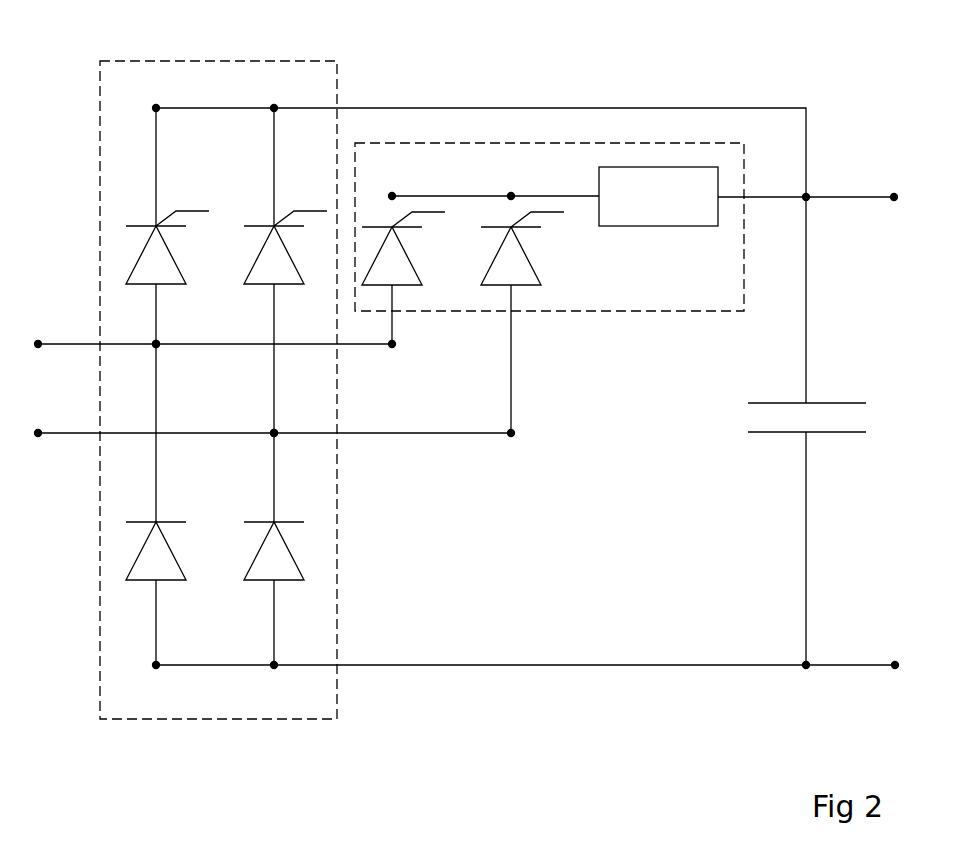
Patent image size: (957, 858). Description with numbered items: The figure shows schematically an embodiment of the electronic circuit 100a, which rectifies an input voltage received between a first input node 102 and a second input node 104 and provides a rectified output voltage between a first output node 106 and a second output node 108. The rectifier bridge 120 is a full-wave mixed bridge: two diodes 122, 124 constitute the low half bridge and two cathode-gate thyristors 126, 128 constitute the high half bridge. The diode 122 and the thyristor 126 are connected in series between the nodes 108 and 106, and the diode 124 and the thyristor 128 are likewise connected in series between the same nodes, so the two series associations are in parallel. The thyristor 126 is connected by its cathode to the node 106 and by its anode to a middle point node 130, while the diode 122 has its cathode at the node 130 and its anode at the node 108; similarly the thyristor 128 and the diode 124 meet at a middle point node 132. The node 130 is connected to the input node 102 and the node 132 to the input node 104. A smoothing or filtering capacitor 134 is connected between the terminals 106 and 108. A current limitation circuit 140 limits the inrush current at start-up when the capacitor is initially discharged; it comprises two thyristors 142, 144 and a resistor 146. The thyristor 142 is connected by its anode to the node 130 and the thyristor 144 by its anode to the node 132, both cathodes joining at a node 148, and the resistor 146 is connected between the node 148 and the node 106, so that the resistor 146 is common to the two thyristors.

The electronic circuit 100a is at (740, 70).
The first input node 102 is at (38, 344).
The second input node 104 is at (38, 433).
The first output node 106 is at (894, 197).
The second output node 108 is at (895, 665).
The rectifier bridge 120 is at (300, 61).
The diode 122 is at (138, 558).
The diode 124 is at (255, 552).
The thyristor 126 is at (138, 262).
The thyristor 128 is at (293, 268).
The middle point node 130 is at (156, 344).
The middle point node 132 is at (274, 433).
The smoothing capacitor 134 is at (833, 403).
The current limitation circuit 140 is at (610, 311).
The thyristor 142 is at (413, 269).
The thyristor 144 is at (532, 269).
The resistor 146 is at (660, 226).
The node 148 is at (511, 196).